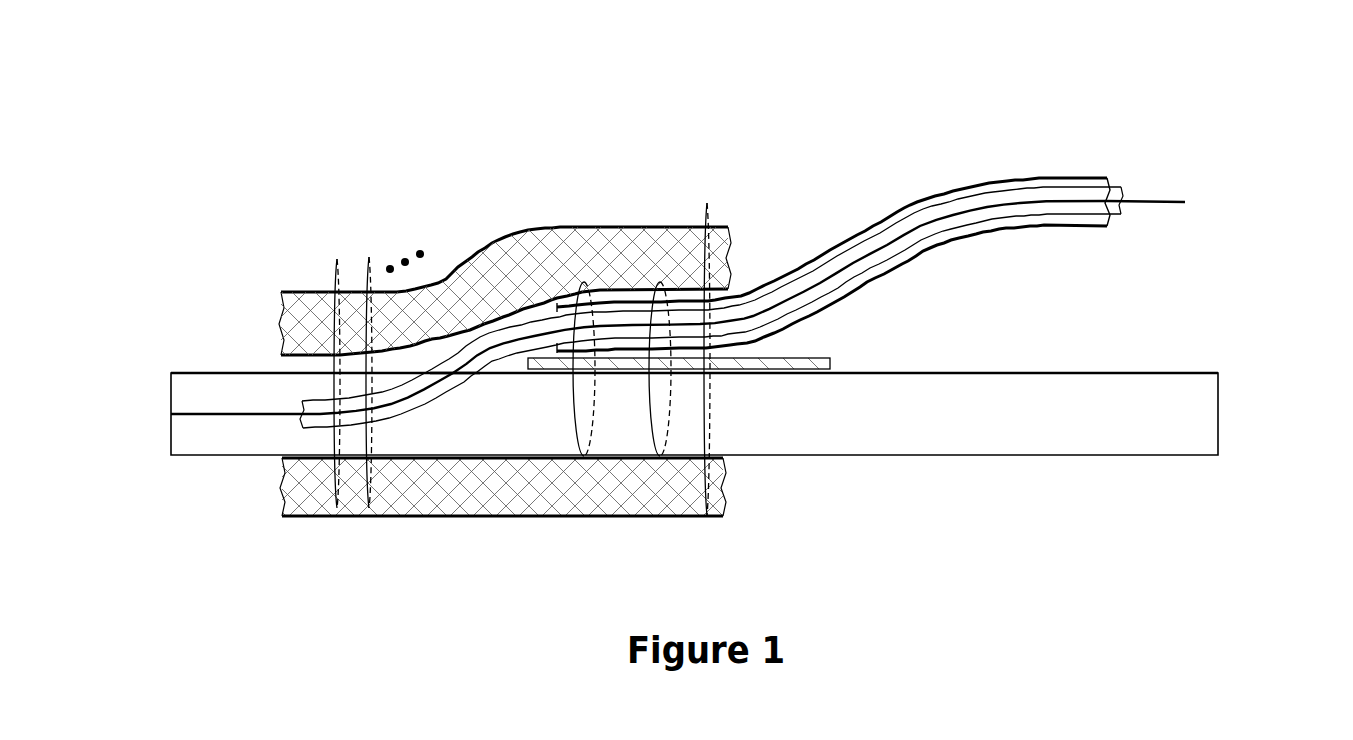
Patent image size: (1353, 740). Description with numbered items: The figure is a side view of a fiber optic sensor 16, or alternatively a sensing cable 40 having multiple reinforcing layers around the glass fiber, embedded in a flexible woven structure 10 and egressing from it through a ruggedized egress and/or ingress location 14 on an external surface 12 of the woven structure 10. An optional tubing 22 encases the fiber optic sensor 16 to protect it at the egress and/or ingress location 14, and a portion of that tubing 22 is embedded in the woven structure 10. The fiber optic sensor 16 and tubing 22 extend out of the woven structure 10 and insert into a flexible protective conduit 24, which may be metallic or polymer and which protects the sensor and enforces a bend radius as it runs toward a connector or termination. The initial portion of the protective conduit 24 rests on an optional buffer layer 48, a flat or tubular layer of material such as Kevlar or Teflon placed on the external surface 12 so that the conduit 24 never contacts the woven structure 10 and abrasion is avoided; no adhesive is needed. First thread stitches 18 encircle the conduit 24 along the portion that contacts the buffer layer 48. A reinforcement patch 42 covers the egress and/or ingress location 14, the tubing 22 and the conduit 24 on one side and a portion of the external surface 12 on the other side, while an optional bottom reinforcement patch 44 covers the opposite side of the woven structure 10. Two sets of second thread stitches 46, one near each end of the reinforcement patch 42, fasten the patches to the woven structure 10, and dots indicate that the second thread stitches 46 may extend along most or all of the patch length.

The woven structure 10 is at (1128, 428).
The external surface 12 is at (1110, 345).
The egress and/or ingress location 14 is at (456, 381).
The fiber optic sensor 16 is at (621, 307).
The first thread stitches 18 is at (653, 276).
The tubing 22 is at (294, 425).
The flexible protective conduit 24 is at (970, 181).
The sensing cable 40 is at (223, 404).
The reinforcement patch 42 is at (496, 258).
The bottom reinforcement patch 44 is at (310, 512).
The second thread stitches 46 is at (742, 167).
The buffer layer 48 is at (838, 356).